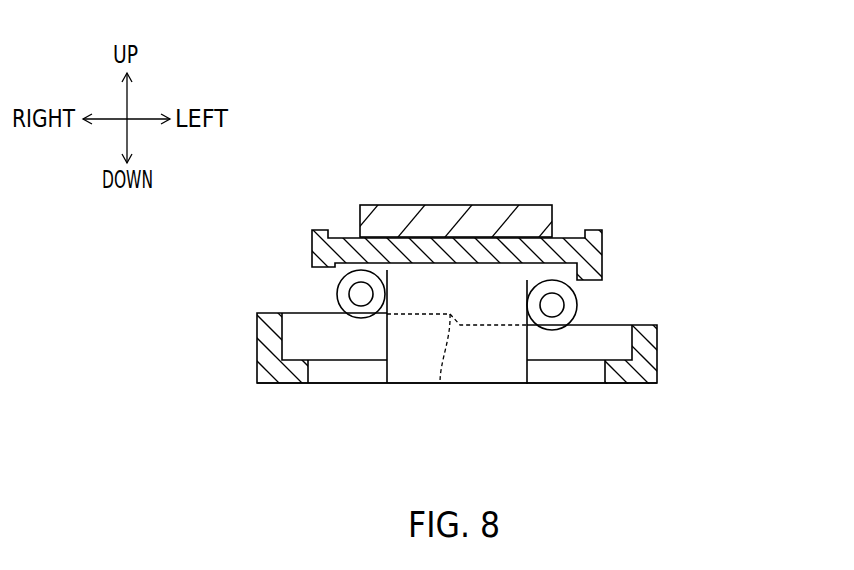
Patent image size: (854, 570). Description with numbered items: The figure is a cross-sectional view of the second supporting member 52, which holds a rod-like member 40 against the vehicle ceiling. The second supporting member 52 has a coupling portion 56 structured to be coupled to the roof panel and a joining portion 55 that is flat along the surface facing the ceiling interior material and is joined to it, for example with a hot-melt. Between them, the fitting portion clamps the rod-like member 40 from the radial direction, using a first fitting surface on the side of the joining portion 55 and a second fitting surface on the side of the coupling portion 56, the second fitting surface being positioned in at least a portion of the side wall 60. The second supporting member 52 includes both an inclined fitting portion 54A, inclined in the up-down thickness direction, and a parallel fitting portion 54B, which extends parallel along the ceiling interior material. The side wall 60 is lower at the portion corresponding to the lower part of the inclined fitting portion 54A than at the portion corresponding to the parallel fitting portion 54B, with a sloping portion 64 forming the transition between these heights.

The coupling portion 56 is at (448, 205).
The second supporting member 52 is at (593, 228).
The parallel fitting portion 54B is at (338, 282).
The inclined fitting portion 54A is at (578, 293).
The rod-like member 40 is at (345, 292).
The side wall 60 is at (572, 347).
The joining portion 55 is at (480, 384).
The sloping portion 64 is at (440, 383).